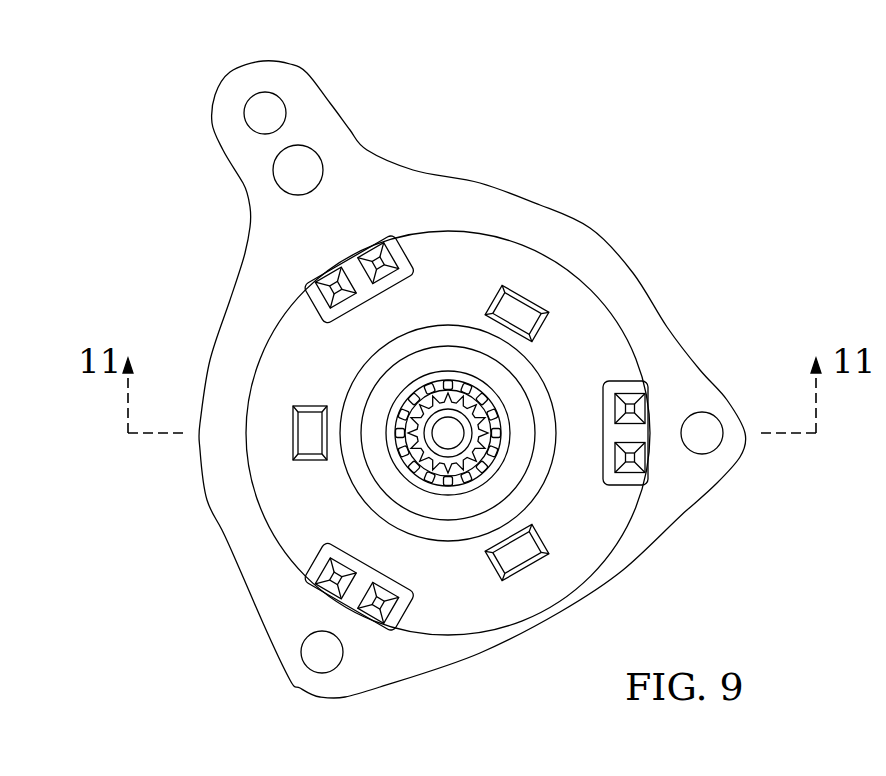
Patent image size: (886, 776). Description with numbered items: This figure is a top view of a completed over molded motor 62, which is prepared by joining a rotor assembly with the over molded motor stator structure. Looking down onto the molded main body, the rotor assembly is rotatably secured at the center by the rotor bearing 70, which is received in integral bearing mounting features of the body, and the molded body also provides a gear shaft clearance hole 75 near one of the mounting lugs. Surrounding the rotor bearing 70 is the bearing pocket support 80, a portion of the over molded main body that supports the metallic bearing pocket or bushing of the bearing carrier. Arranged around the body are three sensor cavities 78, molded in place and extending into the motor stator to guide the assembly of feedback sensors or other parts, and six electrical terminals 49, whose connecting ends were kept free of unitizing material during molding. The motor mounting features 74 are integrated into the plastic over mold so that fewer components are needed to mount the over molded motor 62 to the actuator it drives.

The over molded motor 62 is at (126, 106).
The motor mounting features 74 is at (268, 102).
The gear shaft clearance hole 75 is at (296, 150).
The electrical terminals 49 is at (380, 262).
The sensor cavities 78 is at (523, 300).
The rotor bearing 70 is at (398, 410).
The bearing pocket support 80 is at (540, 386).